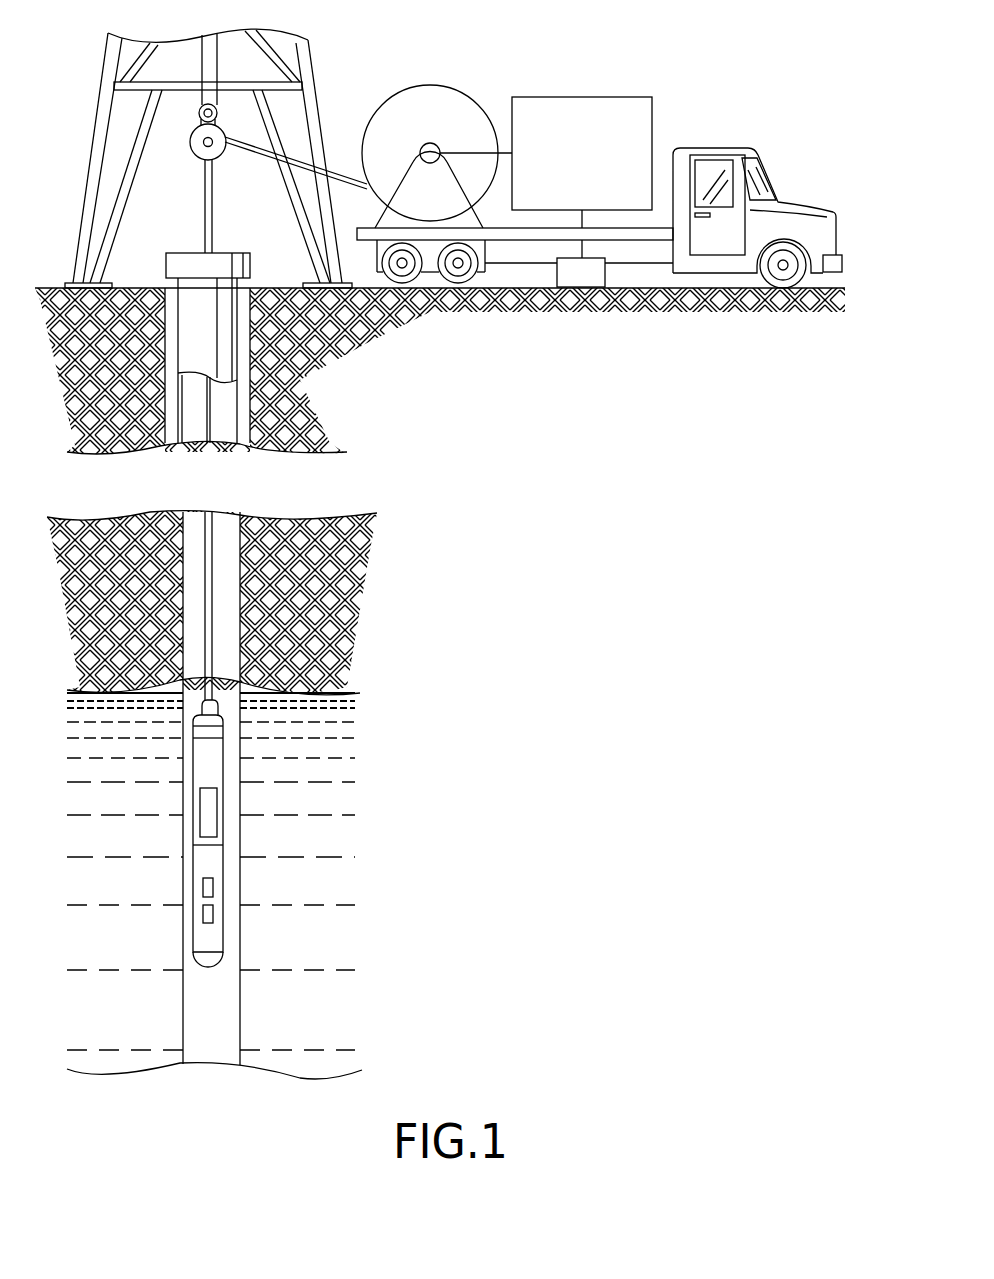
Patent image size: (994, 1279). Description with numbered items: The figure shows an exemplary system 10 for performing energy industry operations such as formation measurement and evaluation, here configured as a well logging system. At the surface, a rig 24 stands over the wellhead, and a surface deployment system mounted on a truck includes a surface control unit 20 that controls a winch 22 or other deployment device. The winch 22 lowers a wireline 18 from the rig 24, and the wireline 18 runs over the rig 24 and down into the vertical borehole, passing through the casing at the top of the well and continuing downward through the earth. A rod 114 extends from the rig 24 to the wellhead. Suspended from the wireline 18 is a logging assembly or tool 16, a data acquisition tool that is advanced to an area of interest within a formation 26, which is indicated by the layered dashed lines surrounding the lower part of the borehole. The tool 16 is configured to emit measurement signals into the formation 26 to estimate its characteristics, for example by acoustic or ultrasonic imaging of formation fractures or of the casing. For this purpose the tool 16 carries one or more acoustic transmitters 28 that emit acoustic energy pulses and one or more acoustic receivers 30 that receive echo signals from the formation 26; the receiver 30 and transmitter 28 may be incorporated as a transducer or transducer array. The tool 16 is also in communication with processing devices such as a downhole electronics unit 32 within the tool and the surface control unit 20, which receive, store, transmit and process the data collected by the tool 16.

The system 10 is at (532, 37).
The surface control unit 20 is at (582, 97).
The winch 22 is at (430, 85).
The rig 24 is at (127, 193).
The rod / riser 114 is at (213, 233).
The wireline 18 is at (210, 412).
The logging assembly or tool 16 is at (235, 739).
The downhole electronics unit 32 is at (208, 818).
The acoustic transmitter 28 is at (203, 888).
The acoustic receiver 30 is at (200, 913).
The formation 26 is at (302, 970).